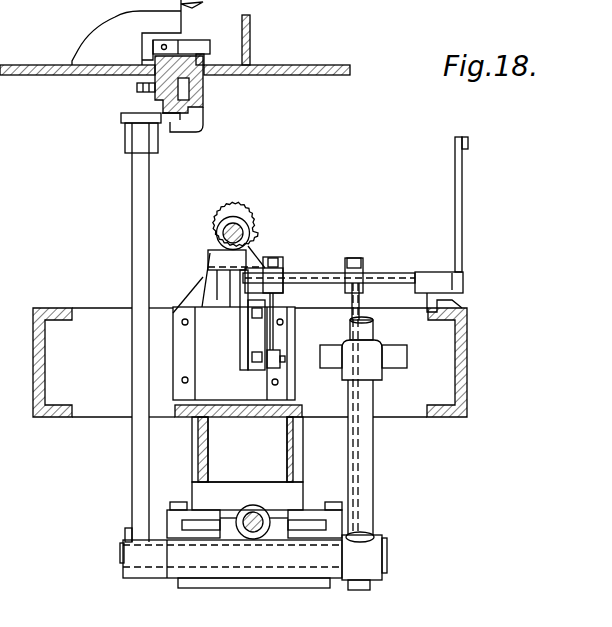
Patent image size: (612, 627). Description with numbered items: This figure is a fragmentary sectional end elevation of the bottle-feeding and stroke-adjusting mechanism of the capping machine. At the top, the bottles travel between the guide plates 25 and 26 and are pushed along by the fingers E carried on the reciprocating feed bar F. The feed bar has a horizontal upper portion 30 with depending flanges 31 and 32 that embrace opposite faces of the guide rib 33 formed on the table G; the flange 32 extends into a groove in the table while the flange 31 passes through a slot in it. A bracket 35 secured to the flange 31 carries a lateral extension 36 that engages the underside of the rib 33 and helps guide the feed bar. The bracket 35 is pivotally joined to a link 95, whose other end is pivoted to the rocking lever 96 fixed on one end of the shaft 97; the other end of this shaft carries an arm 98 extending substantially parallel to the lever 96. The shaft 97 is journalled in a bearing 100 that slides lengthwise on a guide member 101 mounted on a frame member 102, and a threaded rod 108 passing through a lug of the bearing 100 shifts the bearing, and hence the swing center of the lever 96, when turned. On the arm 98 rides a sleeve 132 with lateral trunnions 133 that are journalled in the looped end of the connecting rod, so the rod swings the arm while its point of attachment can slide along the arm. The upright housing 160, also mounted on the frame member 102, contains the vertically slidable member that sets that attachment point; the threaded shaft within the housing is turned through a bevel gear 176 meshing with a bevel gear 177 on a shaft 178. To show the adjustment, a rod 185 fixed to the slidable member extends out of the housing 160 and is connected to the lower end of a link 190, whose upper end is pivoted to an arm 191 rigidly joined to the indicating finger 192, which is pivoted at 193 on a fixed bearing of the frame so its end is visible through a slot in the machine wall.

The guide plate 25 is at (213, 62).
The guide plate 26 is at (251, 25).
The arm D is at (125, 21).
The fingers E is at (195, 45).
The feed bar F is at (136, 80).
The table G is at (297, 76).
The upper portion 30 is at (157, 50).
The flange 31 is at (153, 100).
The flange 32 is at (205, 50).
The guide rib 33 is at (205, 100).
The bracket 35 is at (178, 131).
The extension 36 is at (205, 114).
The link 95 is at (127, 128).
The lever 96 is at (131, 224).
The shaft 97 is at (120, 553).
The arm 98 is at (372, 476).
The bearing 100 is at (262, 572).
The guide member 101 is at (247, 496).
The frame member 102 is at (247, 449).
The threaded rod 108 is at (260, 518).
The sleeve 132 is at (372, 374).
The trunnions 133 is at (333, 358).
The housing 160 is at (234, 353).
The bevel gear 176 is at (266, 246).
The bevel gear 177 is at (251, 224).
The shaft 178 is at (223, 232).
The rod 185 is at (285, 358).
The link 190 is at (281, 307).
The arm 191 is at (278, 262).
The indicating finger 192 is at (460, 234).
The pivot 193 is at (463, 286).